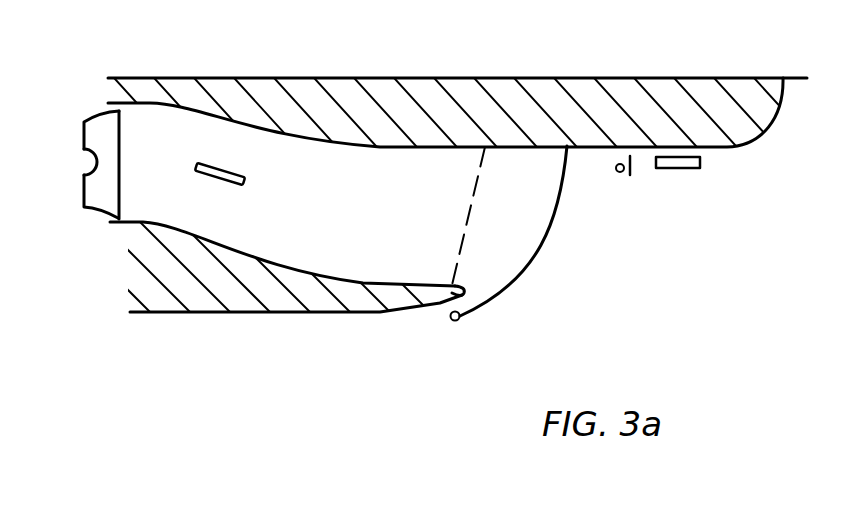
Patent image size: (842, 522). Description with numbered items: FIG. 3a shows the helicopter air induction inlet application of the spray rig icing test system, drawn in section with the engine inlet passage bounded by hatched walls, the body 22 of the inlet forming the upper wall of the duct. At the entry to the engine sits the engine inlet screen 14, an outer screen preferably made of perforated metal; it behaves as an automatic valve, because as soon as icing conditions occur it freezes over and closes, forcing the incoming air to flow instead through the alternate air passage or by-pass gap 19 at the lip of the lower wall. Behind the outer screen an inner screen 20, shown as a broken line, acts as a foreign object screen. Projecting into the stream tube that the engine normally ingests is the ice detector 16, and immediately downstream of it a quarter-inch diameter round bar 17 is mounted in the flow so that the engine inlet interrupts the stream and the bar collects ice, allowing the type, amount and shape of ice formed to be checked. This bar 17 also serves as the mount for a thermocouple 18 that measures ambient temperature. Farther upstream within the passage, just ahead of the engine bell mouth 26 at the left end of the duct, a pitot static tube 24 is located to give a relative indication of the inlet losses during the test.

The engine inlet screen 14 is at (553, 212).
The ice detector 16 is at (678, 157).
The round bar 17 is at (630, 175).
The thermocouple 18 is at (617, 171).
The by-pass gap 19 is at (440, 313).
The inner screen 20 is at (473, 197).
The inlet body 22 is at (333, 200).
The pitot static tube 24 is at (214, 167).
The bell mouth 26 is at (119, 148).